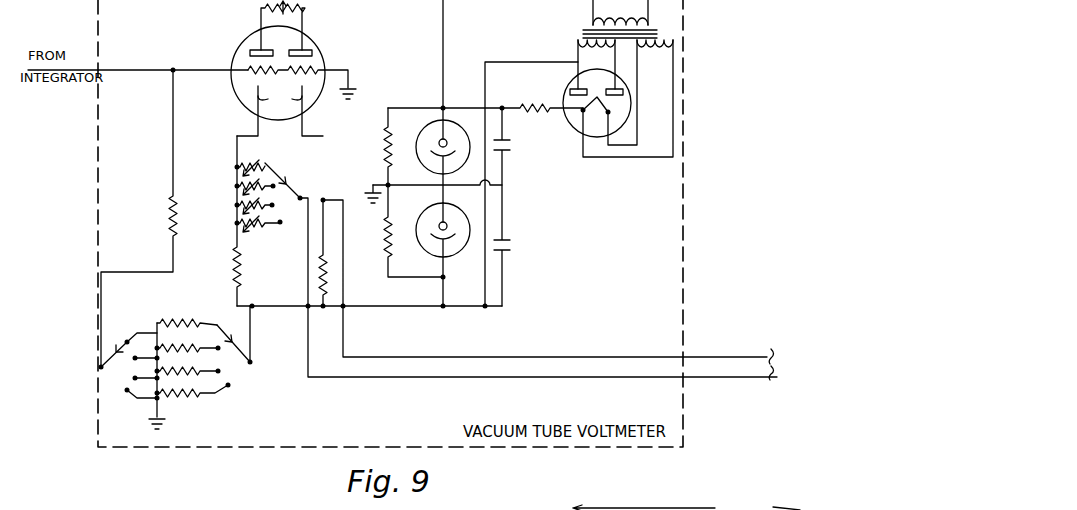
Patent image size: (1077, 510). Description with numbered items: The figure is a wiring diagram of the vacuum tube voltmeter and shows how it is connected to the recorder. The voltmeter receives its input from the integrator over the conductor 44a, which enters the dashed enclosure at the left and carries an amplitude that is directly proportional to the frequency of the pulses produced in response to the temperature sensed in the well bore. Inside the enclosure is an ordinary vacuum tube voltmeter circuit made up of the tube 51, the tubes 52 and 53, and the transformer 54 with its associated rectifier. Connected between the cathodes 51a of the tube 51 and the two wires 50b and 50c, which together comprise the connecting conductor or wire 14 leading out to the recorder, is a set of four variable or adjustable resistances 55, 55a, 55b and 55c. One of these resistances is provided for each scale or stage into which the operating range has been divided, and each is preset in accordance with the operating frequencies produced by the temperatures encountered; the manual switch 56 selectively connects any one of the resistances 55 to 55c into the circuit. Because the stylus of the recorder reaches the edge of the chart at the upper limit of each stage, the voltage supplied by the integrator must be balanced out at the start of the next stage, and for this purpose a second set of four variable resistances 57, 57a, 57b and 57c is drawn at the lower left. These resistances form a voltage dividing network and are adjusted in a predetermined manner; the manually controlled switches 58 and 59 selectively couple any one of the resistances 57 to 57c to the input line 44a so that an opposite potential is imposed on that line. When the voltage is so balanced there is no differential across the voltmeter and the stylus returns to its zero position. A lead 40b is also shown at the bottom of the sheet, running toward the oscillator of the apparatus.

The wire 14 is at (735, 357).
The lead to oscillator 40b is at (719, 508).
The conductor 44a is at (135, 69).
The wire 50b is at (617, 342).
The wire 50c is at (607, 384).
The tube 51 is at (325, 54).
The cathodes 51a is at (293, 98).
The tube 52 is at (432, 128).
The tube 53 is at (460, 223).
The transformer 54 is at (650, 26).
The variable resistance 55 is at (236, 163).
The variable resistance 55a is at (235, 183).
The variable resistance 55b is at (236, 205).
The variable resistance 55c is at (236, 225).
The manual switch 56 is at (298, 184).
The variable resistance 57 is at (196, 306).
The variable resistance 57a is at (204, 324).
The variable resistance 57b is at (205, 375).
The variable resistance 57c is at (197, 401).
The manually controlled switch 58 is at (100, 342).
The manually controlled switch 59 is at (252, 344).